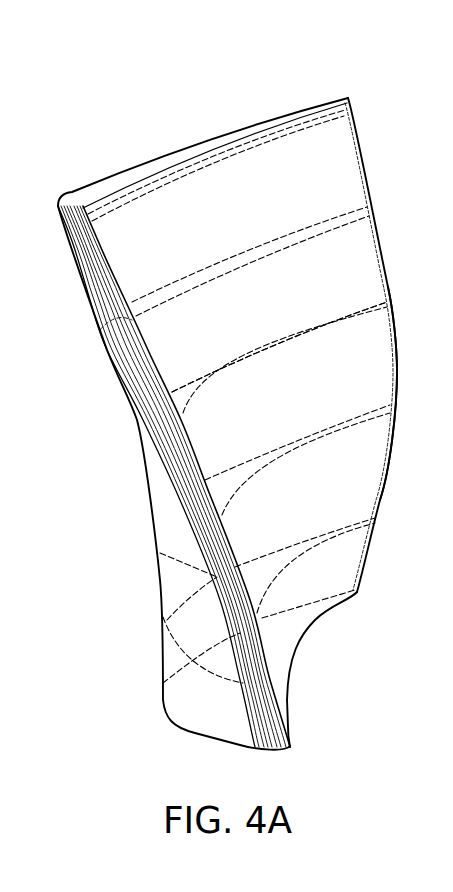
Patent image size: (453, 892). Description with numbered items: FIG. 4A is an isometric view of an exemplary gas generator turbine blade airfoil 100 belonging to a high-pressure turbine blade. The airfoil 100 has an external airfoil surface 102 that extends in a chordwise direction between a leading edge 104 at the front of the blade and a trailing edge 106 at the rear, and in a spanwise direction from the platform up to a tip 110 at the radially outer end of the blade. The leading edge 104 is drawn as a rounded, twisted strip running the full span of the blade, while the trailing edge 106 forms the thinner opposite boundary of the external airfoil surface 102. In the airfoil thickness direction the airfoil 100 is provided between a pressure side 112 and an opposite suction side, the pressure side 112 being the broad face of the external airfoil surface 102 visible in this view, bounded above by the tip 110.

The airfoil 100 is at (391, 91).
The external airfoil surface 102 is at (257, 187).
The leading edge 104 is at (185, 470).
The trailing edge 106 is at (386, 273).
The tip 110 is at (132, 174).
The pressure side 112 is at (268, 312).